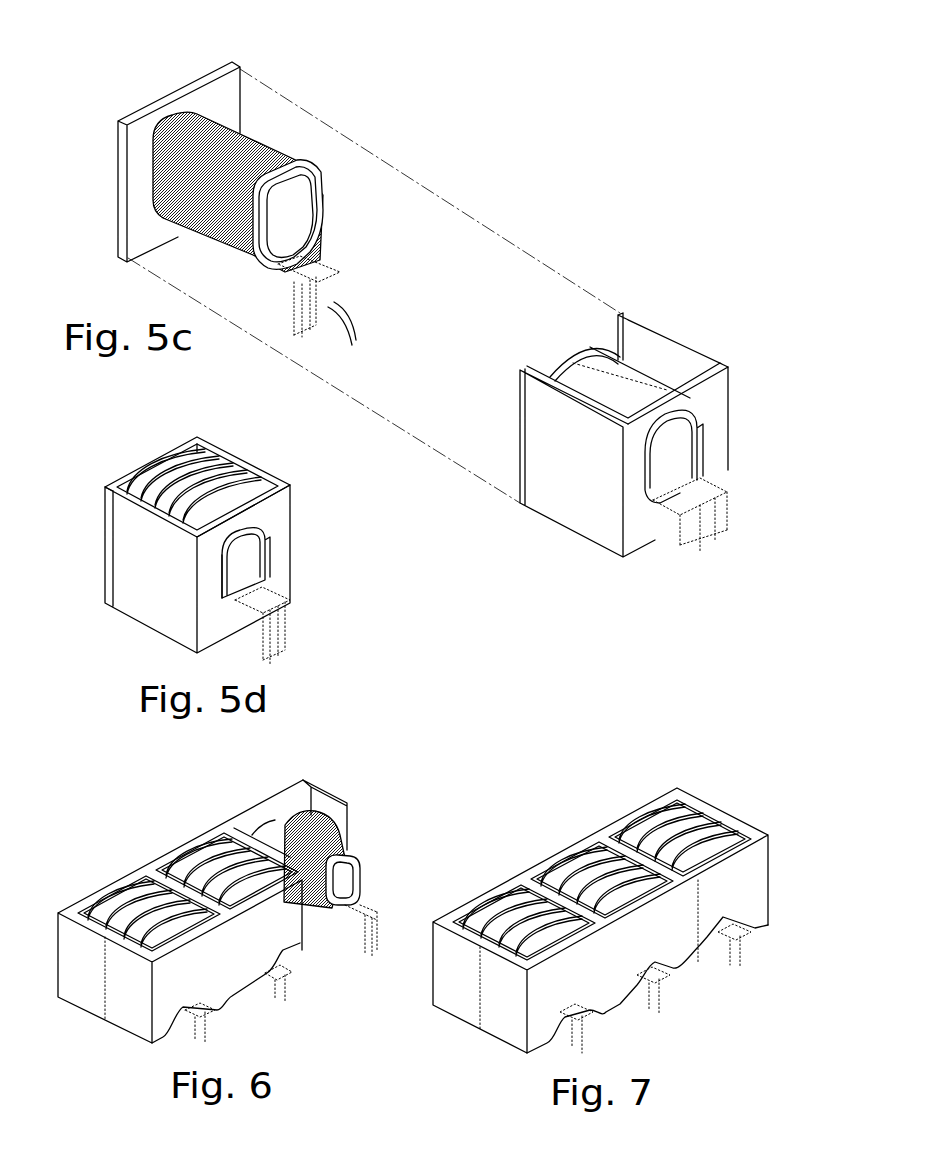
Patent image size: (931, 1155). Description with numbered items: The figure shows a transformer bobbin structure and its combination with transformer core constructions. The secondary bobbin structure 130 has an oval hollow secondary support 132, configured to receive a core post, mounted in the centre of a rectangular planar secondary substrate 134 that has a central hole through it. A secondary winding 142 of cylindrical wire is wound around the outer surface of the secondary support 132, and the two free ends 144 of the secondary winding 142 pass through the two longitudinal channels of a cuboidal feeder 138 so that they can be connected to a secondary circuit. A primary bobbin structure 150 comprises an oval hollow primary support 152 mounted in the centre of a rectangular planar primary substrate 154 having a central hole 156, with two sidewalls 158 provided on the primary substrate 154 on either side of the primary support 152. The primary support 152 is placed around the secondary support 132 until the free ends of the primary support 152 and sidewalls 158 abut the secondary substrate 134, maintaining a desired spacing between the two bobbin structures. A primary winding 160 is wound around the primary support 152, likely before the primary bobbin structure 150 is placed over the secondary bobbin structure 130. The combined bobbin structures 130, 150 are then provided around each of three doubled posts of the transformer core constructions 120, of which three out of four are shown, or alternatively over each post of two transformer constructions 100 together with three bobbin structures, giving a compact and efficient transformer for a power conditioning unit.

In FIG. 7, the transformer construction 100 is at (492, 883).
In FIG. 6, the transformer core construction 120 is at (107, 873).
In FIG. 5C, the secondary bobbin structure 130 is at (118, 106).
In FIG. 5D, the secondary bobbin structure 130 is at (96, 459).
In FIG. 6, the secondary bobbin structure 130 is at (180, 853).
In FIG. 7, the secondary bobbin structure 130 is at (627, 832).
In FIG. 5C, the secondary support 132 is at (292, 199).
In FIG. 5D, the secondary support 132 is at (250, 553).
In FIG. 5C, the secondary substrate 134 is at (225, 87).
In FIG. 5D, the secondary substrate 134 is at (183, 452).
In FIG. 5C, the feeder 138 is at (300, 272).
In FIG. 5D, the feeder 138 is at (268, 607).
In FIG. 5C, the secondary winding 142 is at (245, 143).
In FIG. 5C, the free ends 144 is at (351, 340).
In FIG. 5C, the primary bobbin structure 150 is at (700, 342).
In FIG. 5D, the primary bobbin structure 150 is at (268, 462).
In FIG. 6, the primary bobbin structure 150 is at (293, 917).
In FIG. 7, the primary bobbin structure 150 is at (697, 880).
In FIG. 5C, the primary support 152 is at (583, 377).
In FIG. 5C, the primary substrate 154 is at (704, 401).
In FIG. 5D, the primary substrate 154 is at (273, 513).
In FIG. 5C, the central hole 156 is at (663, 470).
In FIG. 5D, the central hole 156 is at (230, 590).
In FIG. 5C, the sidewalls 158 is at (661, 334).
In FIG. 5D, the sidewalls 158 is at (217, 457).
In FIG. 5D, the primary winding 160 is at (157, 473).